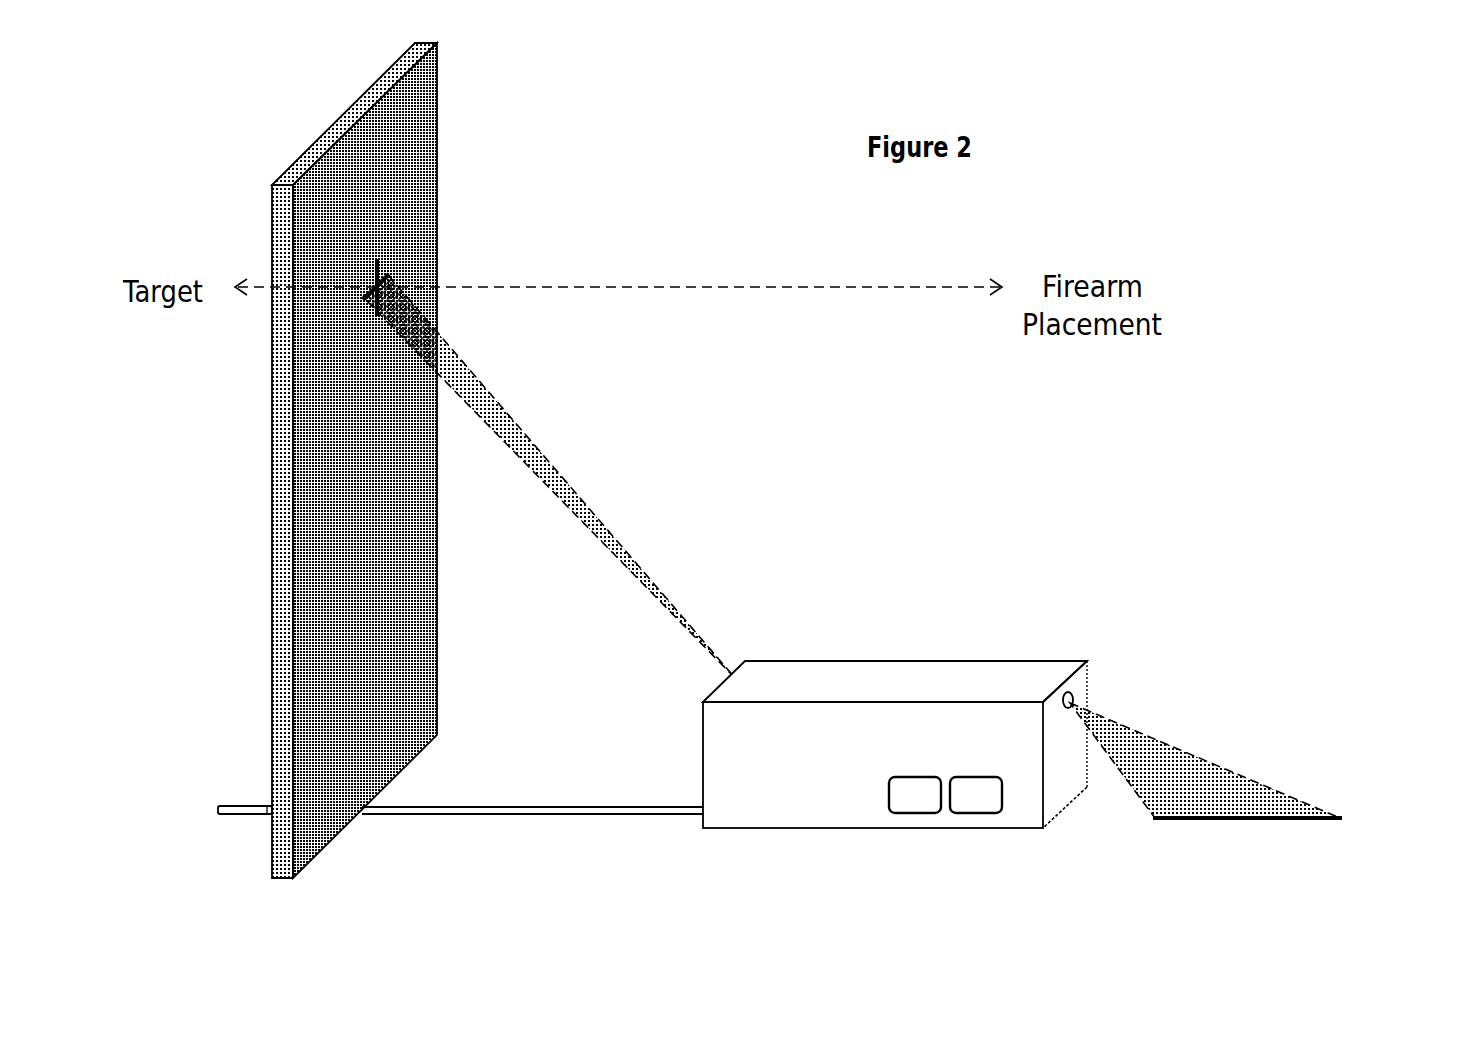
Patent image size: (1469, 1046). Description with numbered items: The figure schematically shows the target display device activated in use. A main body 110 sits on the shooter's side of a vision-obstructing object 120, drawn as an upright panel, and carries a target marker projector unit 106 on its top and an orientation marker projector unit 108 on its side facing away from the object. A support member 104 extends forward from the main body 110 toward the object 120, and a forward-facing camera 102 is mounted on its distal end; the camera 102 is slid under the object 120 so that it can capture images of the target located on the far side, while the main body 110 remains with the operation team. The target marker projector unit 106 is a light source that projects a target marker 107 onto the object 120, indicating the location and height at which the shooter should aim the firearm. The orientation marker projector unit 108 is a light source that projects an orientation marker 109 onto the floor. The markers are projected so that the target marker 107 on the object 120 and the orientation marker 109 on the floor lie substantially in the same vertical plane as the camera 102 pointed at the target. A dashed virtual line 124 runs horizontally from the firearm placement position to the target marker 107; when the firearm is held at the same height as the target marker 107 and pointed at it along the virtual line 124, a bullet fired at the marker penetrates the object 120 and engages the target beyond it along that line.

The forward-facing camera 102 is at (242, 797).
The support member 104 is at (463, 799).
The target marker projector unit 106 is at (750, 653).
The target marker 107 is at (392, 263).
The orientation marker projector unit 108 is at (1092, 695).
The orientation marker 109 is at (1327, 803).
The main body 110 is at (897, 656).
The vision-obstructing object 120 is at (438, 157).
The virtual line 124 is at (703, 302).